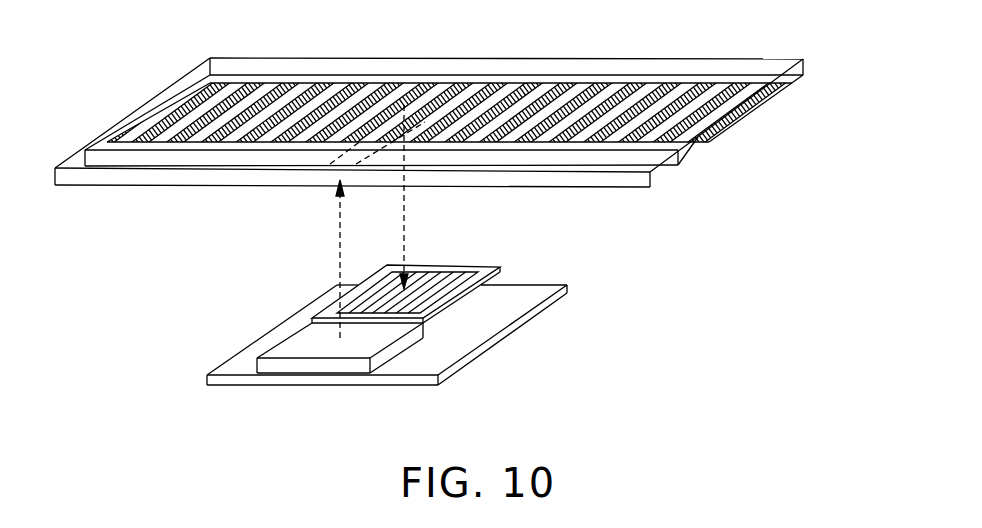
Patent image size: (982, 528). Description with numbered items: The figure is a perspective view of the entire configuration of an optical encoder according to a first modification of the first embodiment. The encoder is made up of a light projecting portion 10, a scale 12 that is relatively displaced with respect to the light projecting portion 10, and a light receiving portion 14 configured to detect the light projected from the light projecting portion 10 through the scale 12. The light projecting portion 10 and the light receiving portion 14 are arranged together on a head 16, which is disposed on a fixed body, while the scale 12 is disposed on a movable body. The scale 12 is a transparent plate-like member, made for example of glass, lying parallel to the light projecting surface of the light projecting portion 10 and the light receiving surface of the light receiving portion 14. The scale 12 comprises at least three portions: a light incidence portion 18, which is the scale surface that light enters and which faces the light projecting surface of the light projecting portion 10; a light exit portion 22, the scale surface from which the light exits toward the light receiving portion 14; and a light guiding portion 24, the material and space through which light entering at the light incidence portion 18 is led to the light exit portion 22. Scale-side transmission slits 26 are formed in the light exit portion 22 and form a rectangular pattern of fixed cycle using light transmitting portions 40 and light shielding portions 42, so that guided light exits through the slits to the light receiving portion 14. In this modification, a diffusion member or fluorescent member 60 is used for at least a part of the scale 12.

The light projecting portion 10 is at (268, 344).
The scale 12 is at (805, 70).
The light receiving portion 14 is at (330, 304).
The head 16 is at (467, 358).
The light incidence portion 18 is at (665, 169).
The light exit portion 22 is at (442, 94).
The light guiding portion 24 is at (125, 157).
The scale-side transmission slits 26 is at (742, 110).
The light transmitting portions 40 is at (600, 95).
The light shielding portions 42 is at (620, 84).
The diffusion member or fluorescent member 60 is at (603, 182).